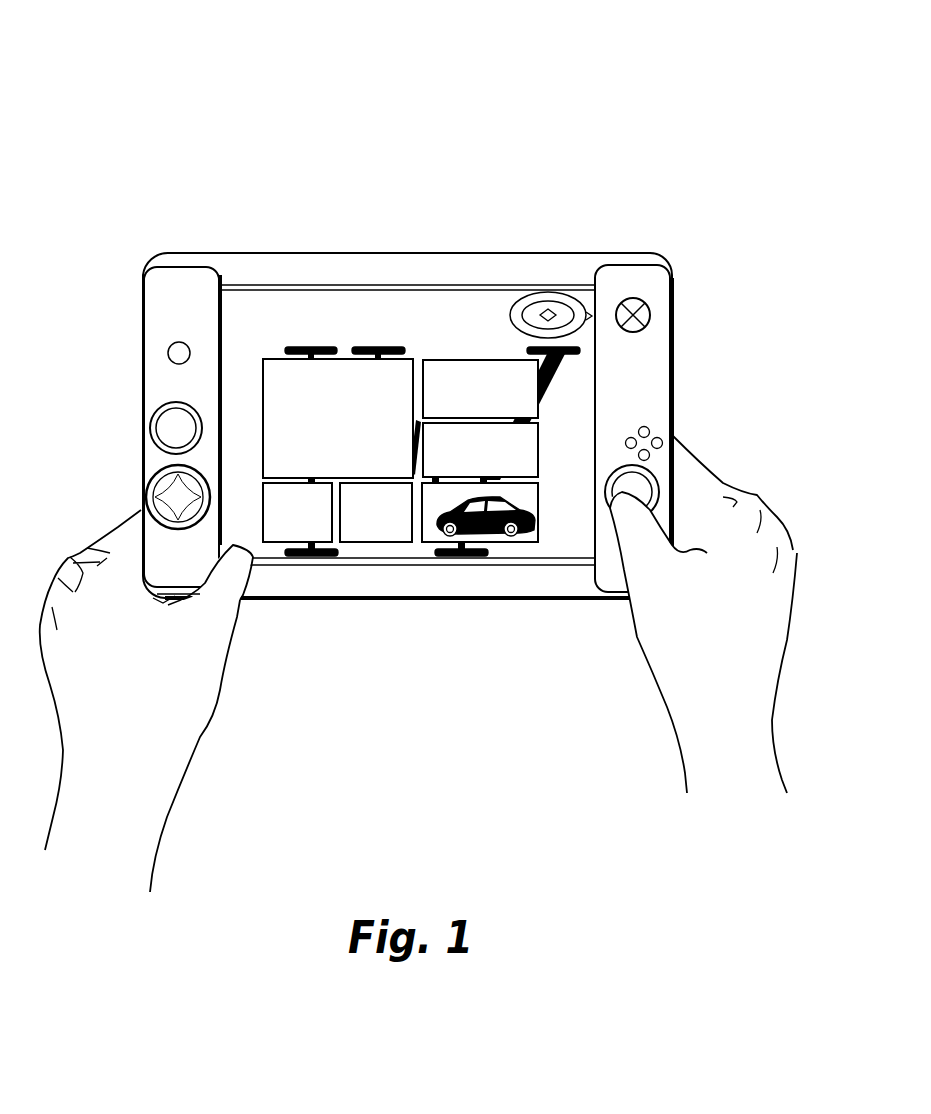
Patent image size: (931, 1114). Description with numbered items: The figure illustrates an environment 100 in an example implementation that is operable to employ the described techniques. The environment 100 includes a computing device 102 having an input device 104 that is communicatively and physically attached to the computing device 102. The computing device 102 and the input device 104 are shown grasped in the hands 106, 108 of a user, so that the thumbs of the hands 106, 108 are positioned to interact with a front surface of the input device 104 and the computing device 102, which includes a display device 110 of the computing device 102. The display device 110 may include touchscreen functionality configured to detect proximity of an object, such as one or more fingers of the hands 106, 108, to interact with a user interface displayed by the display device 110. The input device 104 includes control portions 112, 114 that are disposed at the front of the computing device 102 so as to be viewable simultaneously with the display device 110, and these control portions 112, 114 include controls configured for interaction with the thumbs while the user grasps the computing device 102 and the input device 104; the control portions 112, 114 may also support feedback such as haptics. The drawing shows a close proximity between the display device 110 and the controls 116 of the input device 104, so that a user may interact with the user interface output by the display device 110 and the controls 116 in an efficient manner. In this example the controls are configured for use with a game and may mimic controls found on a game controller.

The environment 100 is at (137, 78).
The computing device 102 is at (316, 232).
The input device 104 is at (683, 275).
The hand 106 is at (145, 701).
The hand 108 is at (703, 614).
The display device 110 is at (412, 421).
The control portion 112 is at (143, 340).
The control portion 114 is at (672, 335).
The controls 116 is at (690, 407).